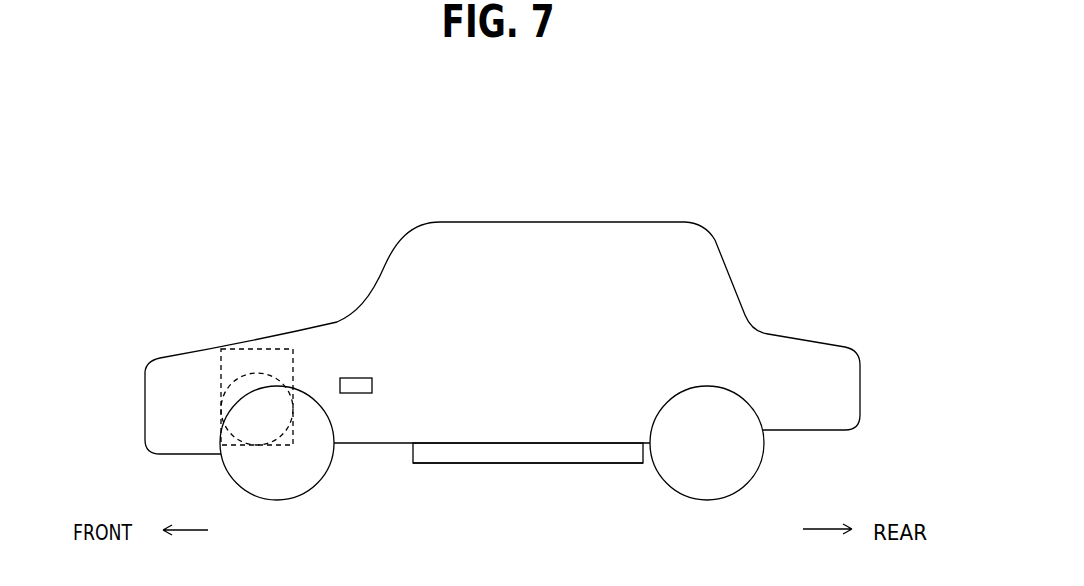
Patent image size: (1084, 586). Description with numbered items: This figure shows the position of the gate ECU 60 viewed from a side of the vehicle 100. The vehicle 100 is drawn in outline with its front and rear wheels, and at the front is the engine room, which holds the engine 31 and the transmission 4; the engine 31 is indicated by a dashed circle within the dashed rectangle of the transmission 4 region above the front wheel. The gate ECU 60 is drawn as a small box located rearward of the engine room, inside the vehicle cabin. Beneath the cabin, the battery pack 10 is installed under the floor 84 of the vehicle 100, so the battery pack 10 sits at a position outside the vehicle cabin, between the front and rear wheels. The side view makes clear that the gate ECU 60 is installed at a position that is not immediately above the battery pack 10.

The vehicle 100 is at (783, 268).
The transmission 4 is at (285, 377).
The engine 31 is at (238, 363).
The gate ECU 60 is at (357, 378).
The floor 84 is at (530, 444).
The battery pack 10 is at (478, 463).